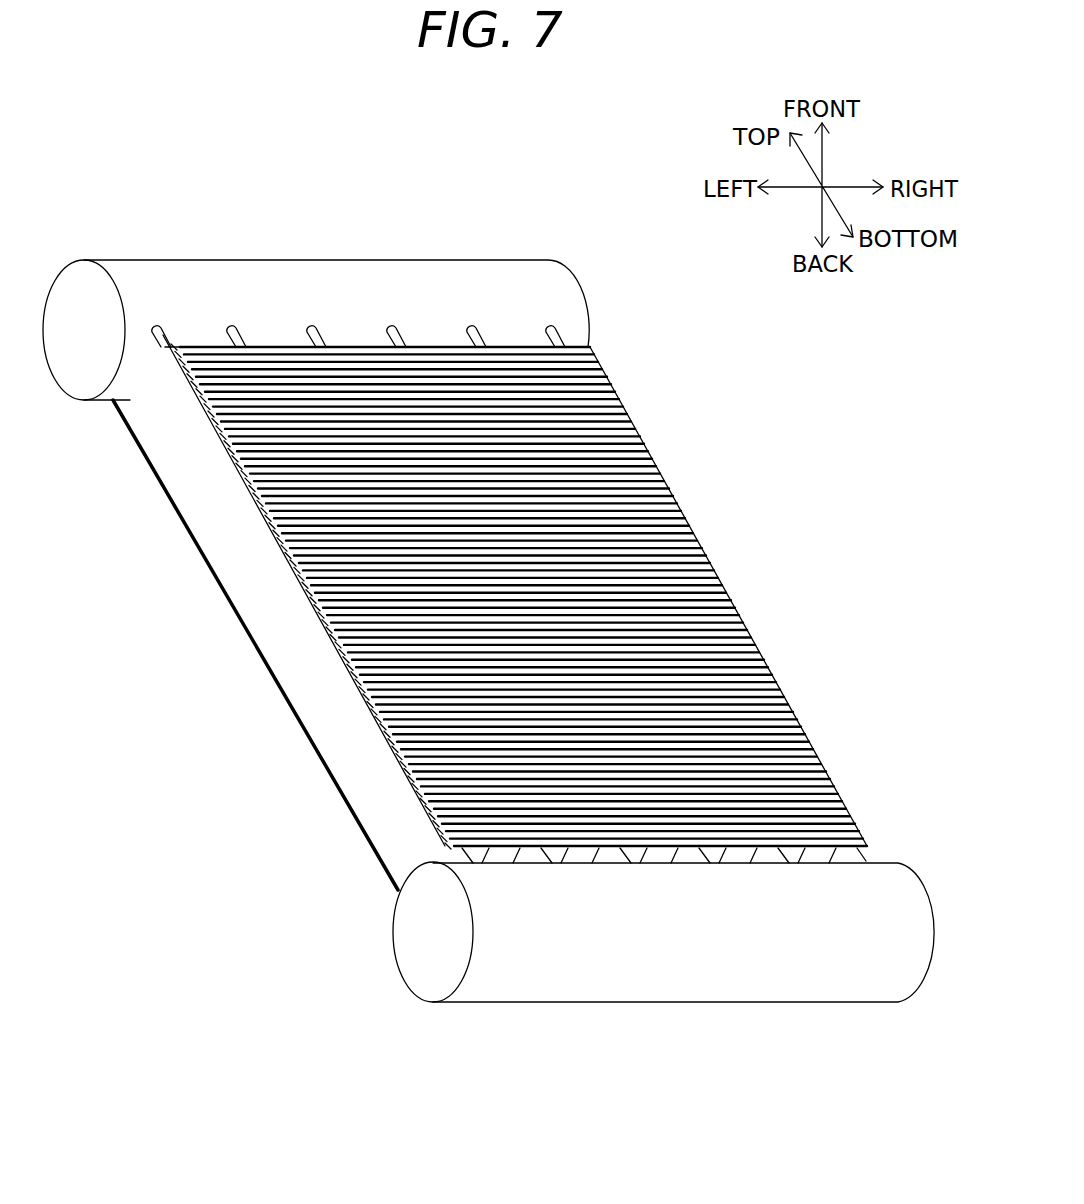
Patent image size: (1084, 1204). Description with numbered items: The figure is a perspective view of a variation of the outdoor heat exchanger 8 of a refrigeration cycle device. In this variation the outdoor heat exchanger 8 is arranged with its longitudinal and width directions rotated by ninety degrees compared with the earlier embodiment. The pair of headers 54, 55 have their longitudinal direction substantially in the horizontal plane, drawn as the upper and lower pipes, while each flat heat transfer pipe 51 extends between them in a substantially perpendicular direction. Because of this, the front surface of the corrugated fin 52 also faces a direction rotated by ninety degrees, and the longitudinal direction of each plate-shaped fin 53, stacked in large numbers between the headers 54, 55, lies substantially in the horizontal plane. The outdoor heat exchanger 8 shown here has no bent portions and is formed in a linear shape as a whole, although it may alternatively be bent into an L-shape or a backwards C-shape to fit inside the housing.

The outdoor heat exchanger 8 is at (698, 421).
The flat heat transfer pipe 51 is at (237, 330).
The corrugated fin 52 is at (570, 858).
The plate-shaped fin 53 is at (653, 572).
The header 54 is at (315, 298).
The header 55 is at (728, 948).